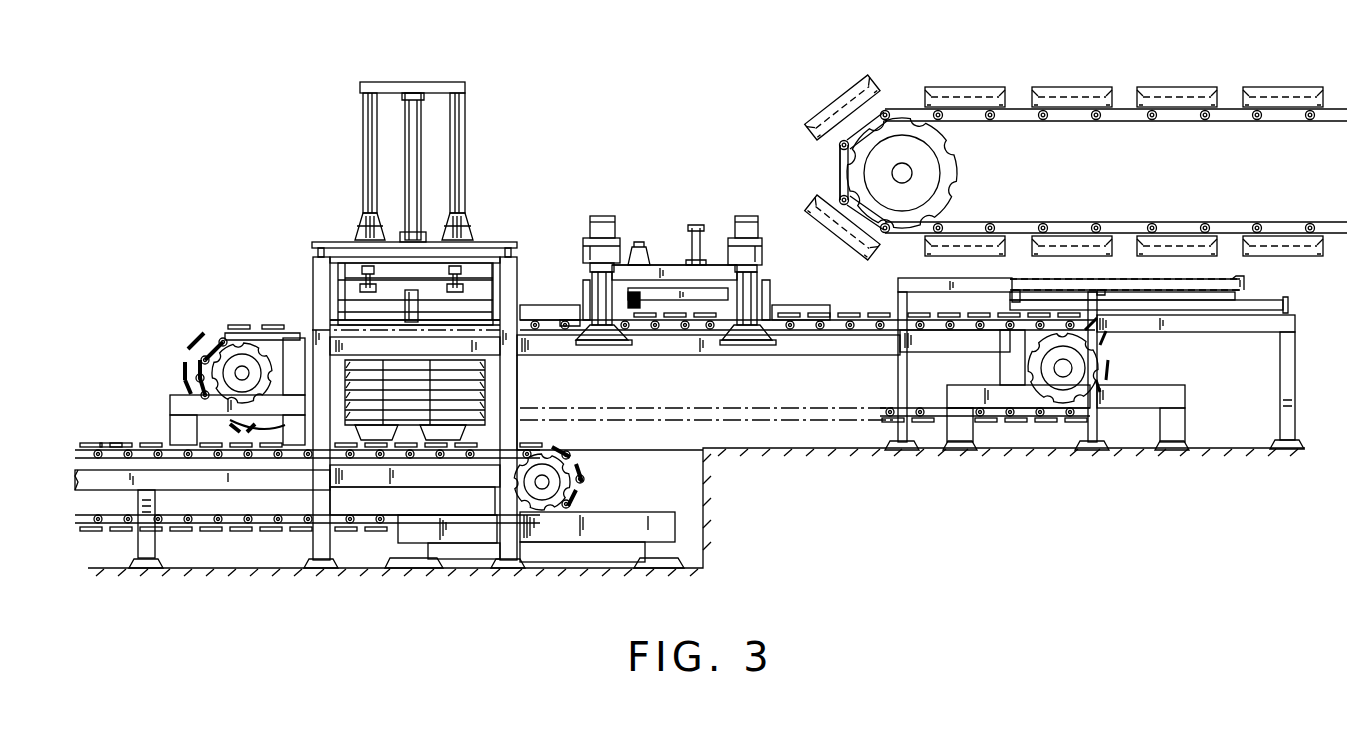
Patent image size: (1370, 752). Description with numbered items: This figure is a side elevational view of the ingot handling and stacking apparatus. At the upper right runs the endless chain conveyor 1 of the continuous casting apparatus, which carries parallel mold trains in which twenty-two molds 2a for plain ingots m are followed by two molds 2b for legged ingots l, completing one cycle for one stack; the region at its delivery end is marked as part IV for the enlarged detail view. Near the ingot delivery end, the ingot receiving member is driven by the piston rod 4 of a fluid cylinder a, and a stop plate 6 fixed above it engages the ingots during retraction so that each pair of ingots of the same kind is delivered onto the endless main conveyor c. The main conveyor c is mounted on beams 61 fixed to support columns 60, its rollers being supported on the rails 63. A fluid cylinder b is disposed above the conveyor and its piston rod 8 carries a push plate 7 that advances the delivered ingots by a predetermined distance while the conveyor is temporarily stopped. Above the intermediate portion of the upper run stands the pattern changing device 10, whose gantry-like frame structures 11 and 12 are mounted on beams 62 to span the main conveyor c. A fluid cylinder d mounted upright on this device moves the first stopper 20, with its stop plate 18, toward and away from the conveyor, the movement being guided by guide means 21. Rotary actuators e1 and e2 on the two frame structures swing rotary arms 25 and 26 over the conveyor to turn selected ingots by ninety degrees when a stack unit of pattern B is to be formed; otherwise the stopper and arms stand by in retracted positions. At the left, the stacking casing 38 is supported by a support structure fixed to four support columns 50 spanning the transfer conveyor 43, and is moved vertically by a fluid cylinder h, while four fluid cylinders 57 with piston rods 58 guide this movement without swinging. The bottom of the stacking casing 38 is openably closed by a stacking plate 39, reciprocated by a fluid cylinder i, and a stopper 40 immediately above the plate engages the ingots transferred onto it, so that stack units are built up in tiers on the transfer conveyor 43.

The endless chain conveyor 1 is at (1228, 112).
The molds 2a is at (890, 110).
The molds 2b is at (862, 248).
The piston rod 4 is at (1100, 291).
The stop plate 6 is at (1020, 290).
The push plate 7 is at (1010, 300).
The piston rod 8 is at (1062, 300).
The pattern changing device 10 is at (652, 204).
The gantry-like frame structure 11 is at (597, 344).
The gantry-like frame structure 12 is at (751, 342).
The stop plate 18 is at (640, 308).
The first stopper 20 is at (692, 300).
The guide means 21 is at (648, 263).
The rotary arm 25 is at (553, 297).
The rotary arm 26 is at (789, 305).
The stacking casing 38 is at (360, 278).
The stacking plate 39 is at (517, 262).
The stopper 40 is at (352, 320).
The transfer conveyor 43 is at (112, 443).
The support columns 50 is at (516, 392).
The fluid cylinders 57 is at (366, 110).
The piston rods 58 is at (366, 275).
The support columns 60 is at (962, 428).
The beams 61 is at (185, 398).
The beams 62 is at (177, 420).
The rails 63 is at (865, 332).
The part IV is at (1052, 70).
The fluid cylinder a is at (1232, 281).
The fluid cylinder b is at (1170, 318).
The main conveyor c is at (1028, 428).
The fluid cylinder d is at (699, 228).
The rotary actuator e1 is at (603, 218).
The rotary actuator e2 is at (746, 218).
The fluid cylinder h is at (398, 158).
The fluid cylinder i is at (418, 300).
The legged ingots l is at (840, 232).
The plain ingots m is at (845, 112).